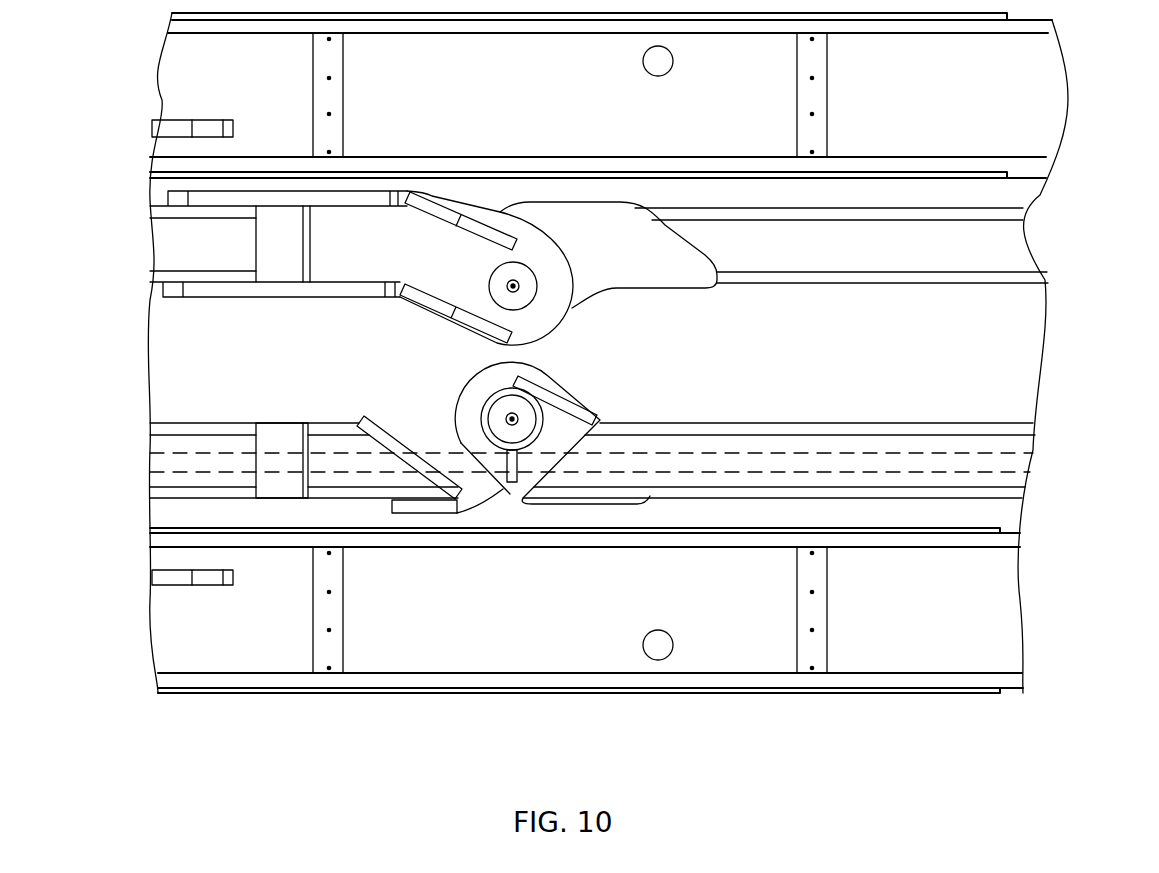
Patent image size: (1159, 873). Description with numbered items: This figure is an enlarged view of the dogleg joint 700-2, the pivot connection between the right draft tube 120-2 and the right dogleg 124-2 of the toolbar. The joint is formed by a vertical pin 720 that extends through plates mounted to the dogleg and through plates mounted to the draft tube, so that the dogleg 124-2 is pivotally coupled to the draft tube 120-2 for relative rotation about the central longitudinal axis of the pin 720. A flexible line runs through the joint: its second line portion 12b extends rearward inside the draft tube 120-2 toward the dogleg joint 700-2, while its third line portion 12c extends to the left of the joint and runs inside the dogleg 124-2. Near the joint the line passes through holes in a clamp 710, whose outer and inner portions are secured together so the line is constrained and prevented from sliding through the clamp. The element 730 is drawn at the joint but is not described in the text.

The third line portion 12c is at (220, 448).
The second line portion 12b is at (990, 447).
The right dogleg 124-2 is at (232, 423).
The right draft tube 120-2 is at (787, 421).
The dogleg joint 700-2 is at (590, 367).
The connecting strips 730 is at (388, 423).
The pin 720 is at (507, 409).
The clamp 710 is at (512, 483).